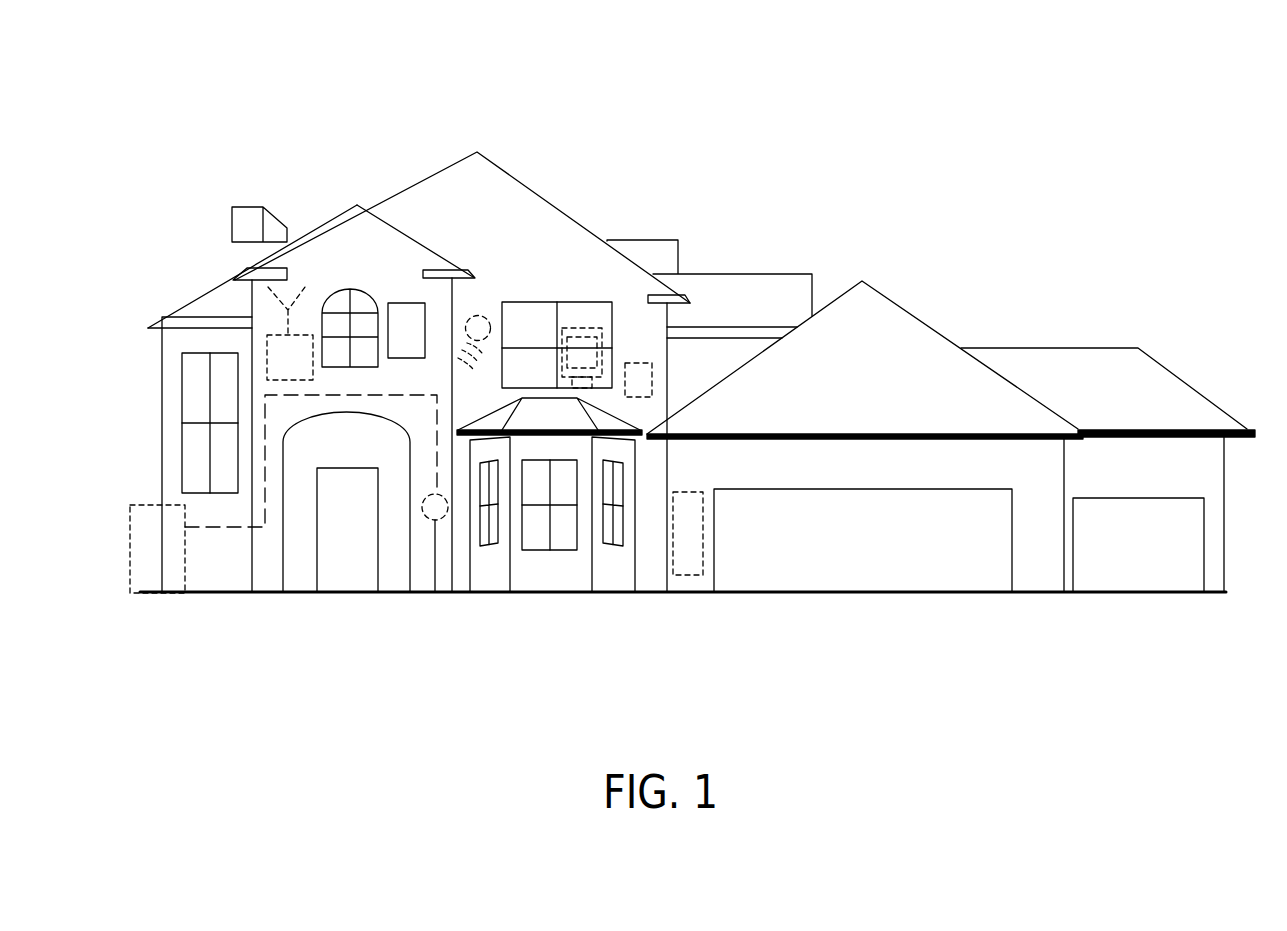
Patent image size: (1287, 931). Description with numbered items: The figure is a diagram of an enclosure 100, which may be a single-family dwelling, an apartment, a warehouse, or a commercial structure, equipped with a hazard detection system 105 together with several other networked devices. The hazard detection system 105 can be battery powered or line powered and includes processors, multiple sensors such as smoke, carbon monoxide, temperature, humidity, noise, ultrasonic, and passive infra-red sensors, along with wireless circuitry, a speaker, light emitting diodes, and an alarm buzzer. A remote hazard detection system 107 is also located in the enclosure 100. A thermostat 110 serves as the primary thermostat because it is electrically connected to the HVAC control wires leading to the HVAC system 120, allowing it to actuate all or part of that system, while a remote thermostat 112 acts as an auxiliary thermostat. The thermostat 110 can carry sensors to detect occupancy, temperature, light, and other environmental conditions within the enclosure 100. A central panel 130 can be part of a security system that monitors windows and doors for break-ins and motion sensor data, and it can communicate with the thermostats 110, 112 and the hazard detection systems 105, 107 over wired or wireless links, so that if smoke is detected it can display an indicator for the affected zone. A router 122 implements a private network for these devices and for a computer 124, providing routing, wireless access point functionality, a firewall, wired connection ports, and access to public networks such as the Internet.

The enclosure 100 is at (952, 176).
The hazard detection system 105 is at (405, 303).
The remote hazard detection system 107 is at (645, 365).
The thermostat 110 is at (435, 593).
The remote thermostat 112 is at (480, 316).
The HVAC system 120 is at (142, 593).
The router 122 is at (292, 287).
The computer 124 is at (590, 337).
The central panel 130 is at (688, 576).